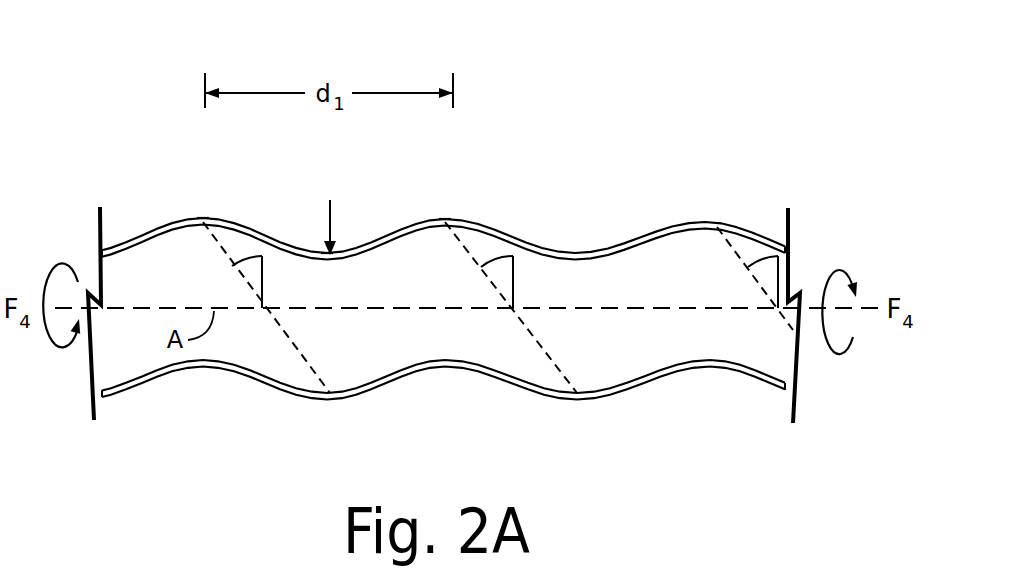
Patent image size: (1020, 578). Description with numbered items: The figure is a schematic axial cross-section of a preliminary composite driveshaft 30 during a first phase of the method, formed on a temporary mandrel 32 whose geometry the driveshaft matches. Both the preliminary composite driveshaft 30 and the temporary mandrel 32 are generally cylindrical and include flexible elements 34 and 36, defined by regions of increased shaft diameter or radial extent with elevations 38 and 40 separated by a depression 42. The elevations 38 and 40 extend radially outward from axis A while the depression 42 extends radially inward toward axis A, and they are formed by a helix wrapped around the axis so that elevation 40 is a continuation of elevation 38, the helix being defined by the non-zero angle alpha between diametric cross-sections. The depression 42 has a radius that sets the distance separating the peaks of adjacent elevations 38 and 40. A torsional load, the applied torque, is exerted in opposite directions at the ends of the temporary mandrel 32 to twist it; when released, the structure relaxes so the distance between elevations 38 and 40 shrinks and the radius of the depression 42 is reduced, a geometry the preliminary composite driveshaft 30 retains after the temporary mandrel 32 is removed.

The preliminary composite driveshaft 30 is at (672, 223).
The temporary mandrel 32 is at (640, 252).
The flexible element 34 is at (444, 255).
The flexible element 36 is at (498, 249).
The elevation 38 is at (205, 218).
The elevation 40 is at (445, 220).
The depression 42 is at (313, 253).